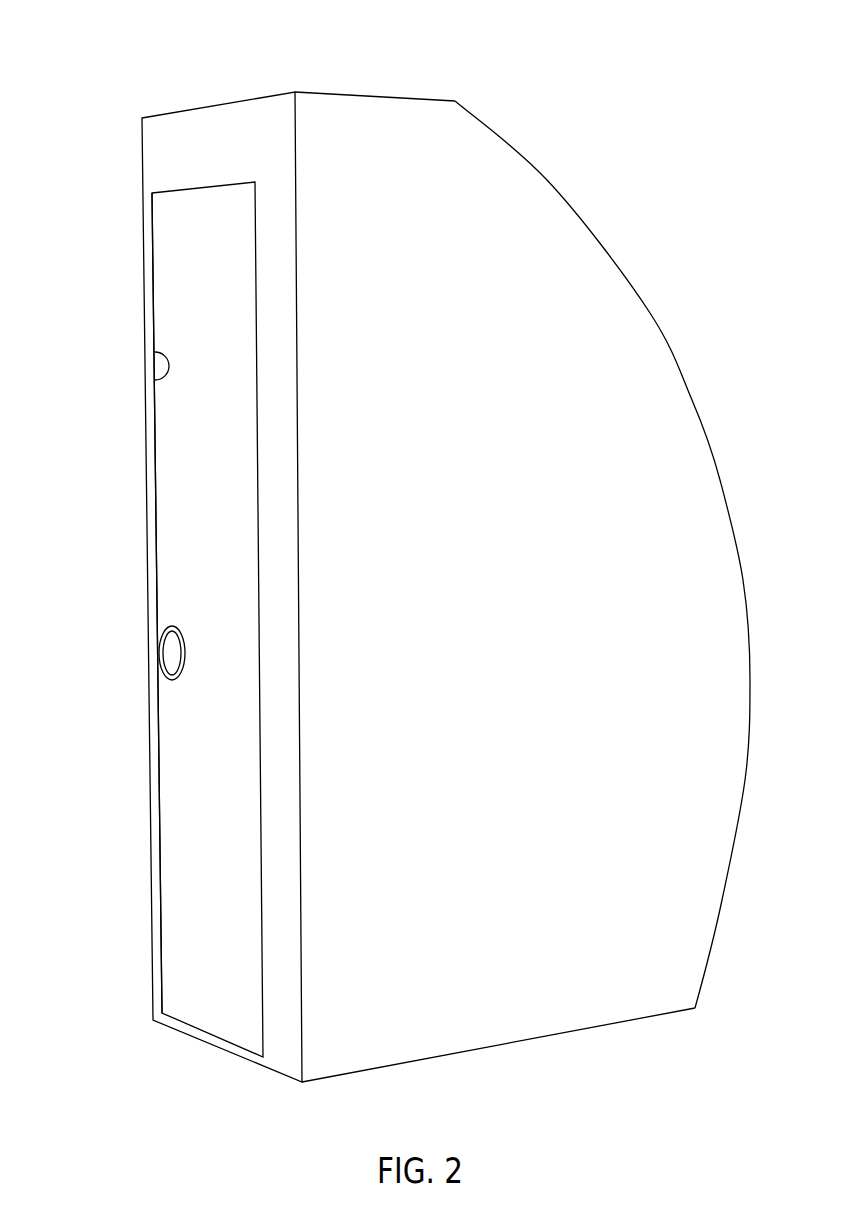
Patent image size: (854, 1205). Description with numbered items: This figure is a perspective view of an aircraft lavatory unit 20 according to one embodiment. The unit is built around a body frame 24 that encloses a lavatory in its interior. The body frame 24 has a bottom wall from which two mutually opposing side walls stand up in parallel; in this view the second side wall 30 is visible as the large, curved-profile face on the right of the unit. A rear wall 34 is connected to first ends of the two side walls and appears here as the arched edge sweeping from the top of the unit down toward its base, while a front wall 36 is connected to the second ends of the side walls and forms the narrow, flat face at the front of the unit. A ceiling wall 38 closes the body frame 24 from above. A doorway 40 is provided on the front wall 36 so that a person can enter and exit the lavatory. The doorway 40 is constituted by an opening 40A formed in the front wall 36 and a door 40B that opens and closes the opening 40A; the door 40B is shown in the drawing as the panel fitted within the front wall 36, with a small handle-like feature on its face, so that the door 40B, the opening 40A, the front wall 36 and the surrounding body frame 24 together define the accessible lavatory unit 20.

The aircraft lavatory unit 20 is at (416, 547).
The body frame 24 is at (622, 1000).
The second side wall 30 is at (543, 591).
The rear wall 34 is at (712, 445).
The front wall 36 is at (158, 145).
The ceiling wall 38 is at (390, 95).
The doorway 40 is at (155, 619).
The opening 40A is at (157, 378).
The door 40B is at (183, 320).